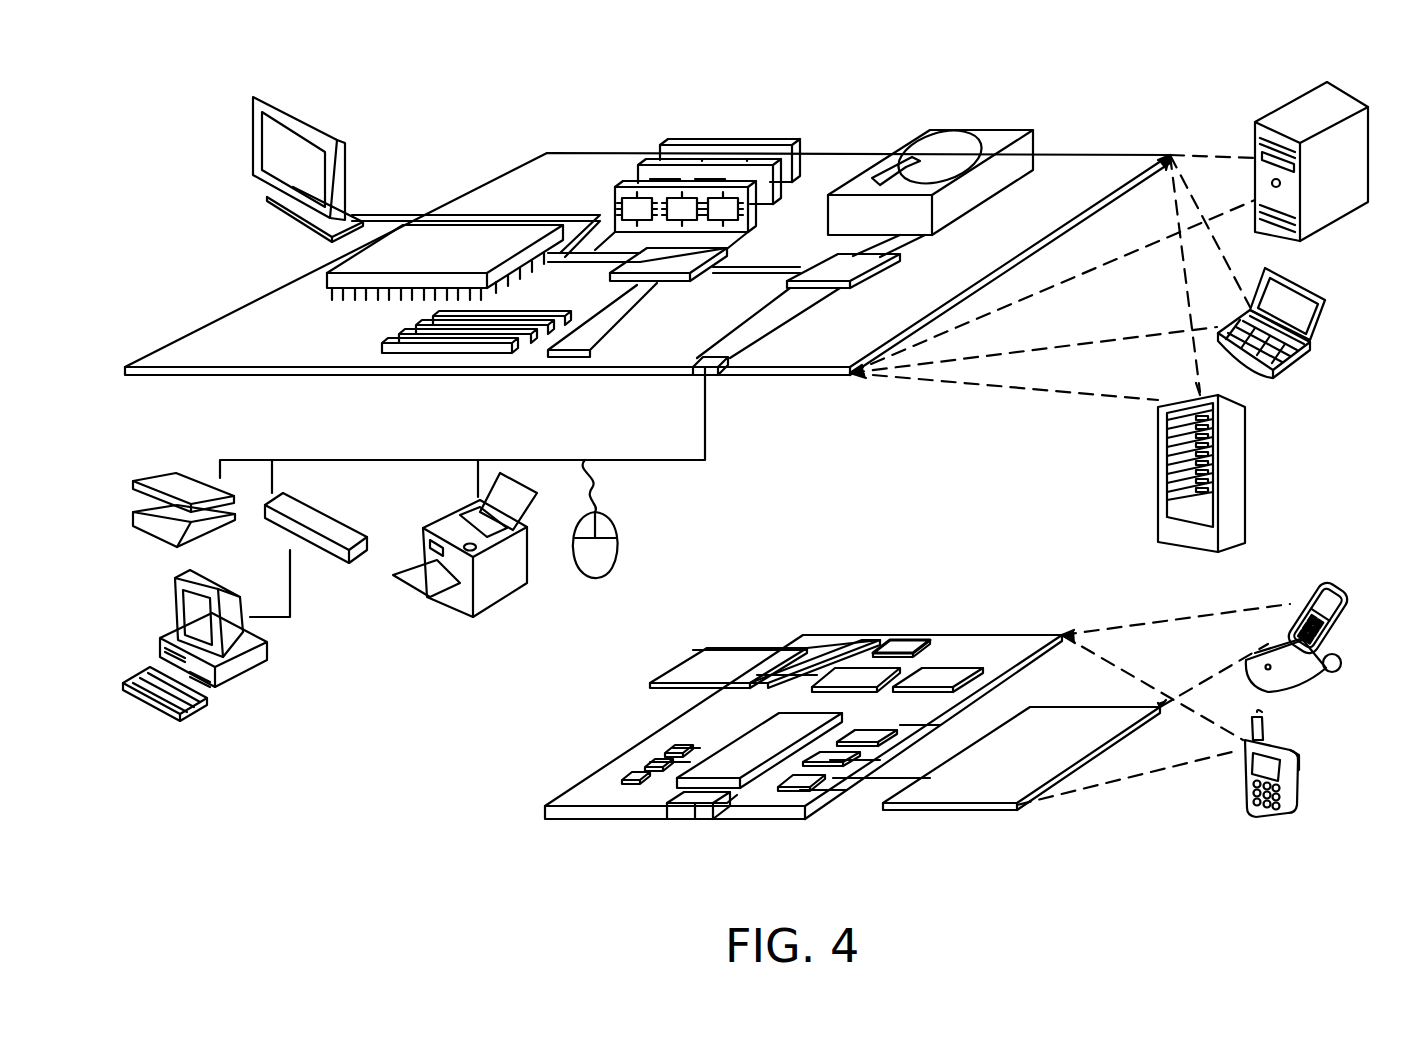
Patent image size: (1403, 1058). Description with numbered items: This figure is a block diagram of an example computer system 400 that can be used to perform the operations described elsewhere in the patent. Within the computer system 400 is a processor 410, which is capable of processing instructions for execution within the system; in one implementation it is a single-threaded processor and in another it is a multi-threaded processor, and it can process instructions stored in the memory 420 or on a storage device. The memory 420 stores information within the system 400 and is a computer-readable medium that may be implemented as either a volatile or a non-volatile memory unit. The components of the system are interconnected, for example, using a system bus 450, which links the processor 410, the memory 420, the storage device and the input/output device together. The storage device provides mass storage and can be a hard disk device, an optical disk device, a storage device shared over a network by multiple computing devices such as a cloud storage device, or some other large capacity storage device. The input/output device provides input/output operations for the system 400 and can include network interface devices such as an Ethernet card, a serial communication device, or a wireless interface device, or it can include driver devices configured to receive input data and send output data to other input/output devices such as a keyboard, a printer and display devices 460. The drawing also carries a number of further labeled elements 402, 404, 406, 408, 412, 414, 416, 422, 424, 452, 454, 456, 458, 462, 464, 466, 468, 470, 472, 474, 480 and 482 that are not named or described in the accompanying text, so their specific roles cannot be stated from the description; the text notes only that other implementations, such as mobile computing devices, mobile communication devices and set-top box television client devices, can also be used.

The computer system 400 is at (442, 90).
The processor 402 is at (330, 278).
The memory modules 404 is at (680, 150).
The hard disk drive 406 is at (928, 132).
The memory controller card 408 is at (630, 258).
The processor 410 is at (398, 333).
The input/output controller 412 is at (813, 268).
The bus connector 414 is at (722, 368).
The display monitor 416 is at (254, 99).
The memory 420 is at (1257, 144).
The laptop computer 422 is at (1326, 300).
The server rack 424 is at (1158, 498).
The system bus 450 is at (520, 818).
The processor 452 is at (730, 775).
The display 454 is at (985, 800).
The integrated circuit 456 is at (800, 780).
The integrated circuit 458 is at (823, 760).
The display devices 460 is at (865, 735).
The connector 462 is at (690, 810).
The sensors 464 is at (640, 765).
The memory 466 is at (856, 680).
The memory 468 is at (937, 680).
The wireless chip 470 is at (903, 647).
The antenna strip 472 is at (787, 650).
The battery 474 is at (712, 650).
The mobile phone 480 is at (1292, 592).
The handset 482 is at (1246, 787).